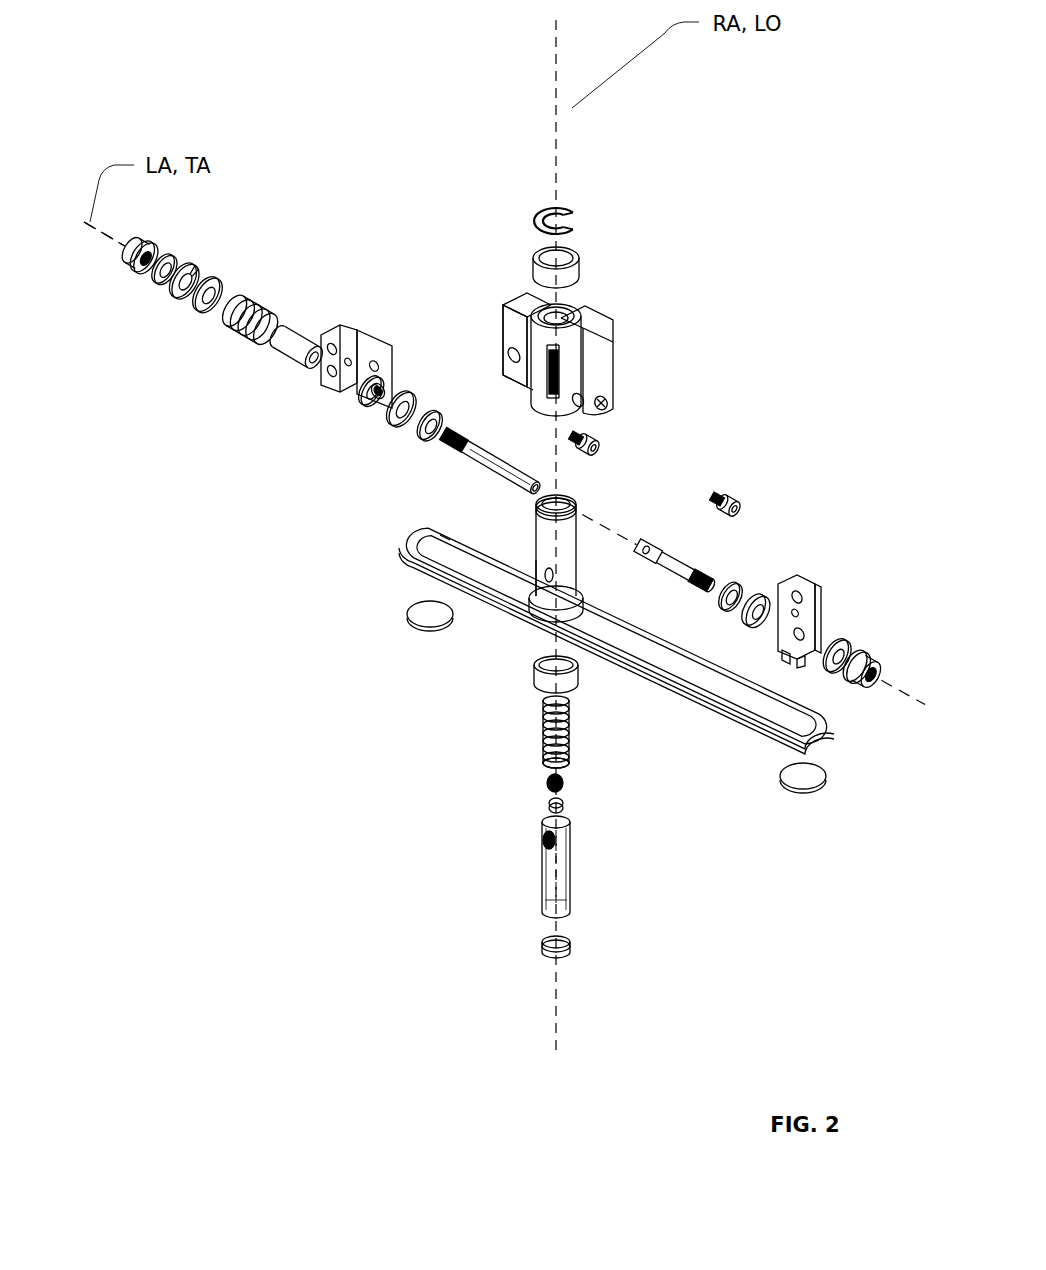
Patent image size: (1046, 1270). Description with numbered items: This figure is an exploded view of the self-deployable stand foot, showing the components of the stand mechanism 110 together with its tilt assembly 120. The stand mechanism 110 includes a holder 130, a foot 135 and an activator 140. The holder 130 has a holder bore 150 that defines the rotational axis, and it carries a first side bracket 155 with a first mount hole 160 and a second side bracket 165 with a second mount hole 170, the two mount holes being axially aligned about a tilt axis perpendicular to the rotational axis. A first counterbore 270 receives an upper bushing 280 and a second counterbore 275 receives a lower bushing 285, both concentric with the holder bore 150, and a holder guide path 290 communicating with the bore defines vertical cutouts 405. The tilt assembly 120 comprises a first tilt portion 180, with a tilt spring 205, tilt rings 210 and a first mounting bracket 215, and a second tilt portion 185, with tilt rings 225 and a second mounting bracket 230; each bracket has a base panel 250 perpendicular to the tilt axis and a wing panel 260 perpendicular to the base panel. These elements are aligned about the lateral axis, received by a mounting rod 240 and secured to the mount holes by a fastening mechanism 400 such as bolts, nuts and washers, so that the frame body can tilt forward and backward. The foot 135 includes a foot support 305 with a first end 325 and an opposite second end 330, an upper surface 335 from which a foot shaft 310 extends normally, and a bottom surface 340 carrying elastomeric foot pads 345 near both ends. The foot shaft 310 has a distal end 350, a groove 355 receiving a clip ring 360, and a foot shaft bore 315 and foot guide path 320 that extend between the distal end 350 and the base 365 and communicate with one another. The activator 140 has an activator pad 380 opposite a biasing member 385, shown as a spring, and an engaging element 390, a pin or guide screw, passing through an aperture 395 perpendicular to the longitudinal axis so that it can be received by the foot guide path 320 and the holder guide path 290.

The stand mechanism 110 is at (298, 87).
The tilt assembly 120 is at (350, 238).
The holder 130 is at (572, 368).
The foot 135 is at (572, 870).
The activator 140 is at (586, 636).
The holder bore 150 is at (604, 322).
The first side bracket 155 is at (521, 424).
The first mount hole 160 is at (492, 336).
The second side bracket 165 is at (604, 343).
The second mount hole 170 is at (611, 398).
The first tilt portion 180 is at (160, 210).
The second tilt portion 185 is at (896, 644).
The tilt spring 205 is at (225, 336).
The tilt rings 210 is at (160, 282).
The first mounting bracket 215 is at (293, 361).
The tilt rings 225 is at (447, 441).
The second mounting bracket 230 is at (765, 618).
The mounting rod 240 is at (492, 448).
The base panel 250 is at (357, 396).
The wing panel 260 is at (330, 381).
The first counterbore 270 is at (586, 308).
The second counterbore 275 is at (604, 404).
The upper bushing 280 is at (583, 256).
The lower bushing 285 is at (548, 803).
The holder guide path 290 is at (601, 352).
The foot support 305 is at (595, 622).
The foot shaft 310 is at (533, 686).
The foot shaft bore 315 is at (541, 762).
The foot guide path 320 is at (542, 704).
The first end 325 is at (425, 558).
The second end 330 is at (812, 652).
The upper surface 335 is at (452, 542).
The bottom surface 340 is at (613, 656).
The foot pads 345 is at (422, 618).
The distal end 350 is at (578, 500).
The groove 355 is at (540, 503).
The clip ring 360 is at (576, 212).
The base 365 is at (546, 781).
The activator pad 380 is at (568, 948).
The biasing member 385 is at (541, 821).
The engaging element 390 is at (538, 842).
The aperture 395 is at (531, 868).
The fastening mechanism 400 is at (131, 262).
The vertical cutouts 405 is at (598, 378).